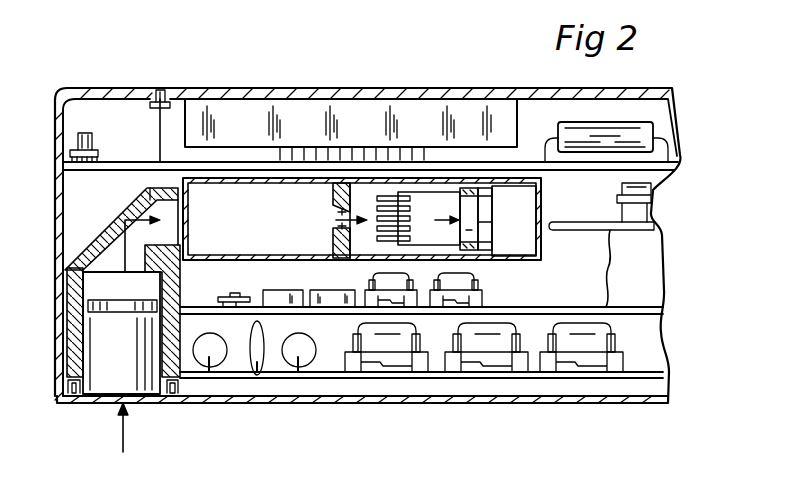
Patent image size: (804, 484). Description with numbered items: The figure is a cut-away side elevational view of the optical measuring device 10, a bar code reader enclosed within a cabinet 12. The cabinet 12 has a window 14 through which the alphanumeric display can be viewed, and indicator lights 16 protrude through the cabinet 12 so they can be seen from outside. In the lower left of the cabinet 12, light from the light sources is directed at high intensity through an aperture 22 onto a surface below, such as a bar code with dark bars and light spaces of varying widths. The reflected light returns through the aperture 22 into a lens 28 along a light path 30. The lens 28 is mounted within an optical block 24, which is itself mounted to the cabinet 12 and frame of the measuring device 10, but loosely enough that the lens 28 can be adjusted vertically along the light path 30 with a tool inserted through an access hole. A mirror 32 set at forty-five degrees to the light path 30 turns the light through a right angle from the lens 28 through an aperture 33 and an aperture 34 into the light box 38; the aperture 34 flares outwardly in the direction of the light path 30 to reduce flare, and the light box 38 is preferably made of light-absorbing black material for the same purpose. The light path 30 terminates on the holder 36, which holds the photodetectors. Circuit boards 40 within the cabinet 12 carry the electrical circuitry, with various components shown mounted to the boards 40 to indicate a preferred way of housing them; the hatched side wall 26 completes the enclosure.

The measuring device 10 is at (489, 72).
The cabinet 12 is at (98, 62).
The window 14 is at (419, 147).
The indicator lights 16 is at (165, 90).
The aperture 22 is at (118, 400).
The optical block 24 is at (180, 283).
The side wall 26 is at (80, 307).
The lens 28 is at (138, 383).
The light path 30 is at (133, 222).
The mirror 32 is at (137, 200).
The aperture 33 is at (190, 222).
The aperture 34 is at (333, 212).
The holder 36 is at (477, 208).
The light box 38 is at (526, 265).
The circuit boards 40 is at (682, 157).